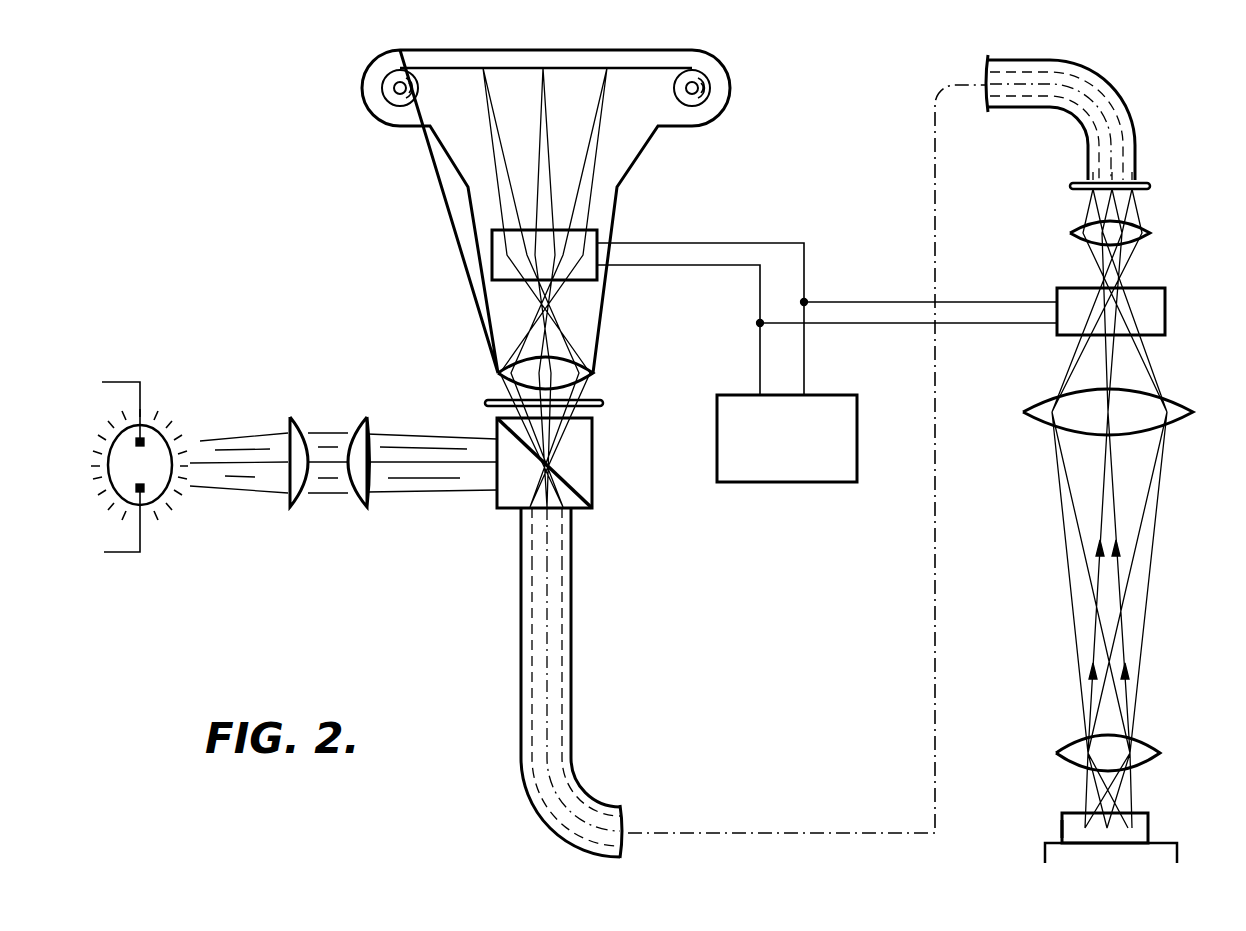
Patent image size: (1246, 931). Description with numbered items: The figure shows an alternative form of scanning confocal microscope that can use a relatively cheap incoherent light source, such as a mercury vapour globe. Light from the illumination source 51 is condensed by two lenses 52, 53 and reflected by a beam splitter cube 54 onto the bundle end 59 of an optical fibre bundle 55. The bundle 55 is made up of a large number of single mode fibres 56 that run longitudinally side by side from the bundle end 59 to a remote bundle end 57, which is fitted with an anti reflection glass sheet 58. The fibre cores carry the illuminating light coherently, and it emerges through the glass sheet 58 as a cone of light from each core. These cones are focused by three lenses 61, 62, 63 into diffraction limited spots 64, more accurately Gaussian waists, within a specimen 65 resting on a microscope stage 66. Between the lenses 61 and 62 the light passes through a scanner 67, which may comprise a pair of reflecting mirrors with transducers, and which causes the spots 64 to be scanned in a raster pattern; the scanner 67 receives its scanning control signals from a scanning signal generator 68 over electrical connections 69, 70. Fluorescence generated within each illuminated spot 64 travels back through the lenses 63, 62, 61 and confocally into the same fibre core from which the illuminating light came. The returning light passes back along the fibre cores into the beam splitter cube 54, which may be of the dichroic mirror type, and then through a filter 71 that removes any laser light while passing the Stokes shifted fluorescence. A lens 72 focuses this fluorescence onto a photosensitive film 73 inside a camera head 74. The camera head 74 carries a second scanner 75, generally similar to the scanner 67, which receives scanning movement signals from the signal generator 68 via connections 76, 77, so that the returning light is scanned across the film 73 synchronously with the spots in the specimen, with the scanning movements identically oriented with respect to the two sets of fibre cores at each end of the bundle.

The illumination source 51 is at (167, 495).
The lens 52 is at (290, 507).
The lens 53 is at (362, 507).
The beam splitter cube 54 is at (594, 462).
The optical fibre bundle 55 is at (575, 690).
The single mode fibres 56 is at (572, 746).
The remote bundle end 57 is at (1100, 168).
The anti reflection glass sheet 58 is at (1150, 185).
The bundle end 59 is at (537, 515).
The lens 61 is at (1150, 233).
The lens 62 is at (1180, 410).
The lens 63 is at (1160, 751).
The diffraction limited spots 64 is at (1130, 833).
The specimen 65 is at (1067, 825).
The microscope stage 66 is at (1062, 850).
The scanner 67 is at (1165, 312).
The scanning signal generator 68 is at (783, 458).
The electrical connection 69 is at (900, 300).
The electrical connection 70 is at (905, 325).
The filter 71 is at (612, 403).
The lens 72 is at (597, 372).
The photosensitive film 73 is at (462, 70).
The camera head 74 is at (632, 165).
The scanner 75 is at (492, 248).
The connection 76 is at (686, 243).
The connection 77 is at (674, 268).